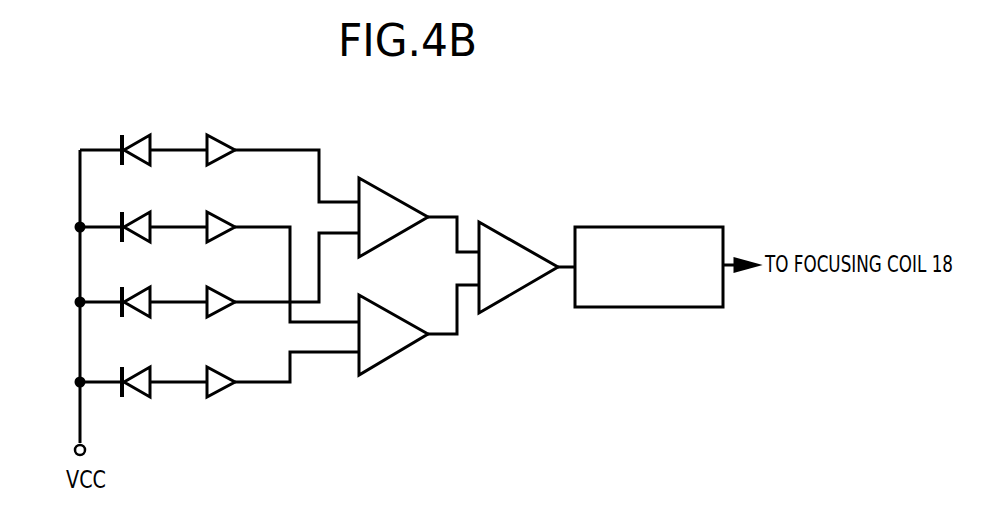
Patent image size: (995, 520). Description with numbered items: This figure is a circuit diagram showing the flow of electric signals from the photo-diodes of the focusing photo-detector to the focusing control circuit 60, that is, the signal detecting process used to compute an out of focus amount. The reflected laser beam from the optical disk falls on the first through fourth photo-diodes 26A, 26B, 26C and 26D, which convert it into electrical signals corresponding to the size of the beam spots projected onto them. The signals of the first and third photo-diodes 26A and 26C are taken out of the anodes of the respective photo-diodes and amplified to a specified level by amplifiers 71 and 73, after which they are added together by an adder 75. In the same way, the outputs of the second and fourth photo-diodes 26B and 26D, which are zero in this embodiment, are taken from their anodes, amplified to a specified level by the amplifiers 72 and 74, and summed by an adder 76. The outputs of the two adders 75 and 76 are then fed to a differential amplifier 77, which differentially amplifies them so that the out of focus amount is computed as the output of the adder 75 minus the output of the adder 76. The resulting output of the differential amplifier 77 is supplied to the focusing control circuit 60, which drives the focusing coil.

The first photo-diode 26A is at (138, 142).
The second photo-diode 26B is at (140, 219).
The third photo-diode 26C is at (139, 295).
The fourth photo-diode 26D is at (139, 375).
The amplifier 71 is at (228, 138).
The amplifier 72 is at (227, 215).
The amplifier 73 is at (226, 292).
The amplifier 74 is at (226, 372).
The adder 75 is at (398, 201).
The adder 76 is at (396, 318).
The differential amplifier 77 is at (519, 241).
The focusing control circuit 60 is at (649, 227).